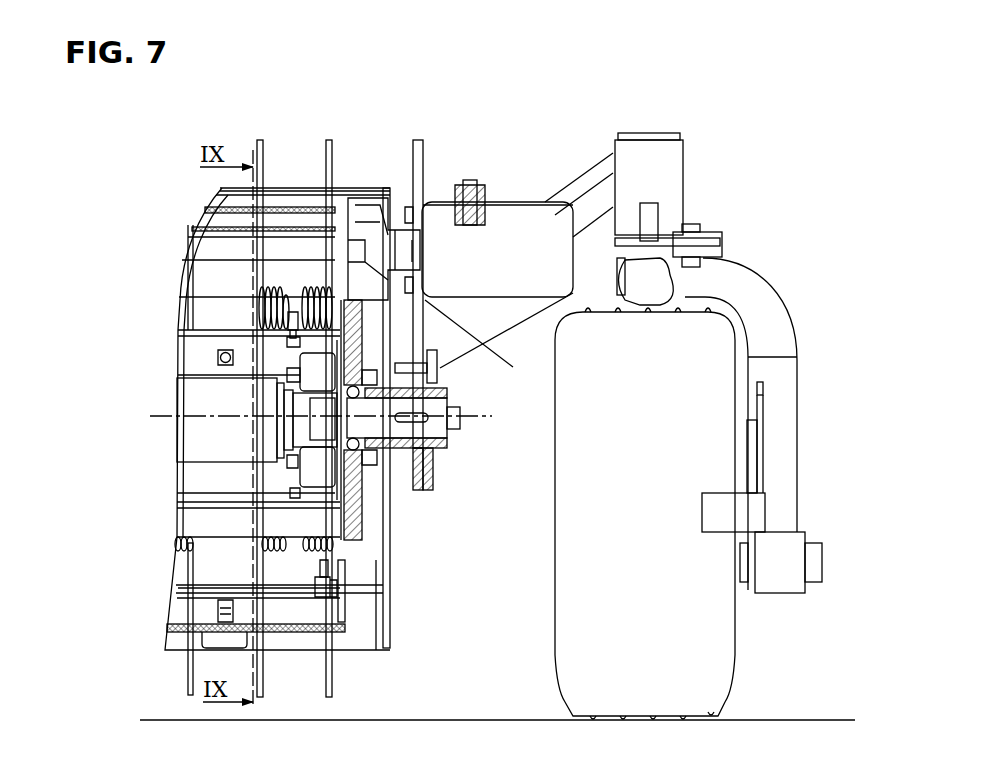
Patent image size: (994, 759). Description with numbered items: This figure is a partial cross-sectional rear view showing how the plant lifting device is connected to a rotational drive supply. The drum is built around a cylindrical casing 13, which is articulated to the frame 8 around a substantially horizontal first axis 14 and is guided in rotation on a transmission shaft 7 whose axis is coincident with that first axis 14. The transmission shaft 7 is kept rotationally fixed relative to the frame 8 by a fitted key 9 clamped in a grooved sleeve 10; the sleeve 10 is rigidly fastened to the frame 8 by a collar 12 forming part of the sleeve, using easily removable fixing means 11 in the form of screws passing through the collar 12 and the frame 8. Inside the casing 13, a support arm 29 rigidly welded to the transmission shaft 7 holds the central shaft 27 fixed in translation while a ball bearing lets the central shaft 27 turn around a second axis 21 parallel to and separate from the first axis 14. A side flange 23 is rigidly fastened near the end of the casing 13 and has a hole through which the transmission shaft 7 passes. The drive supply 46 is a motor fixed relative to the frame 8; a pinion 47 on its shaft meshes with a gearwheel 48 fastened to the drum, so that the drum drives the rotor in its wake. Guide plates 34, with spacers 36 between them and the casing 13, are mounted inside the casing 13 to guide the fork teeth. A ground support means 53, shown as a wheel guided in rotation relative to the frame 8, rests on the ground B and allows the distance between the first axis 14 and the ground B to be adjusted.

The transmission shaft 7 is at (358, 413).
The frame 8 is at (419, 163).
The fitted key 9 is at (422, 415).
The grooved sleeve 10 is at (394, 449).
The fixing means 11 is at (438, 368).
The collar 12 is at (429, 449).
The casing 13 is at (288, 185).
The first axis 14 is at (265, 445).
The second axis 21 is at (162, 418).
The side flange 23 is at (344, 610).
The central shaft 27 is at (298, 372).
The support arm 29 is at (300, 473).
The guide plate 34 is at (214, 625).
The spacer 36 is at (216, 640).
The drive supply 46 is at (507, 227).
The pinion 47 is at (360, 218).
The gearwheel 48 is at (350, 523).
The ground support means 53 is at (652, 500).
The ground B is at (743, 720).